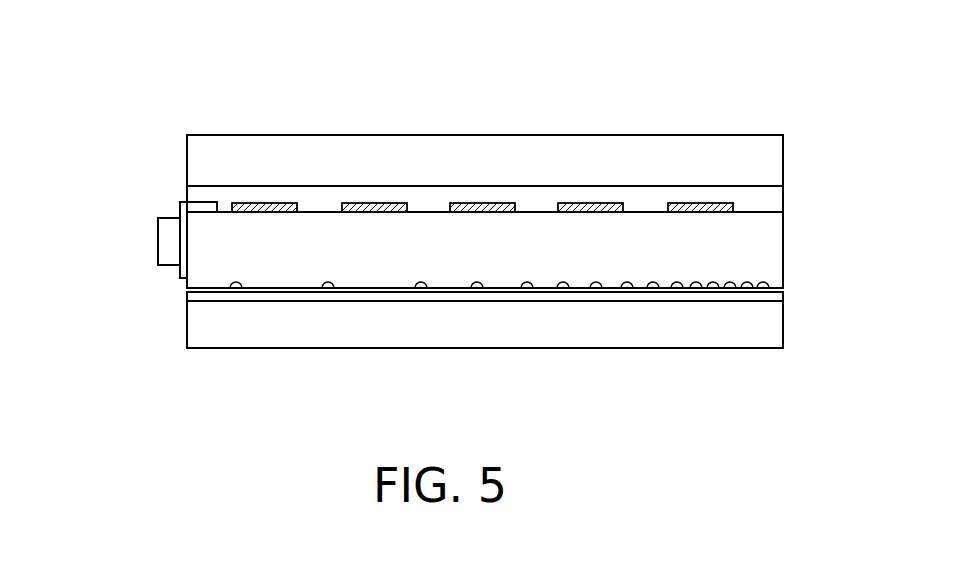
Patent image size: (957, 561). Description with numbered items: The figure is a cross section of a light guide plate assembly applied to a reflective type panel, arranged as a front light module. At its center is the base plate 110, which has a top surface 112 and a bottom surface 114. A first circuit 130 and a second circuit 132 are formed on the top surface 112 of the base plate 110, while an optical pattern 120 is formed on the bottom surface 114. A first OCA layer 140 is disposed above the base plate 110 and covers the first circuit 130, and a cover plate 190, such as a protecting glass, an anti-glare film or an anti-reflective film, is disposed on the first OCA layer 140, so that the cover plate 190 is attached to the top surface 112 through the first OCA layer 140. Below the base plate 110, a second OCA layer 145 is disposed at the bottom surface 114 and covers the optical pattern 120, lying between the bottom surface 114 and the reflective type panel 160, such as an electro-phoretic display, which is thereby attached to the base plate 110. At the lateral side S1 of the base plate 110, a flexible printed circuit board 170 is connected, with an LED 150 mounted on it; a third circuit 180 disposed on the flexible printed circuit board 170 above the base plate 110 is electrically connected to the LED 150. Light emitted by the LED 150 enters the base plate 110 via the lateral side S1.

The cover plate 190 is at (763, 162).
The first OCA layer 140 is at (763, 200).
The base plate 110 is at (783, 242).
The top surface 112 is at (318, 212).
The bottom surface 114 is at (288, 290).
The optical pattern 120 is at (770, 284).
The second OCA layer 145 is at (763, 296).
The reflective type panel 160 is at (765, 337).
The first circuit 130 is at (479, 146).
The second circuit 132 is at (260, 203).
The flexible printed circuit board 170 is at (126, 219).
The third circuit 180 is at (181, 208).
The LED 150 is at (168, 243).
The lateral side S1 is at (187, 276).